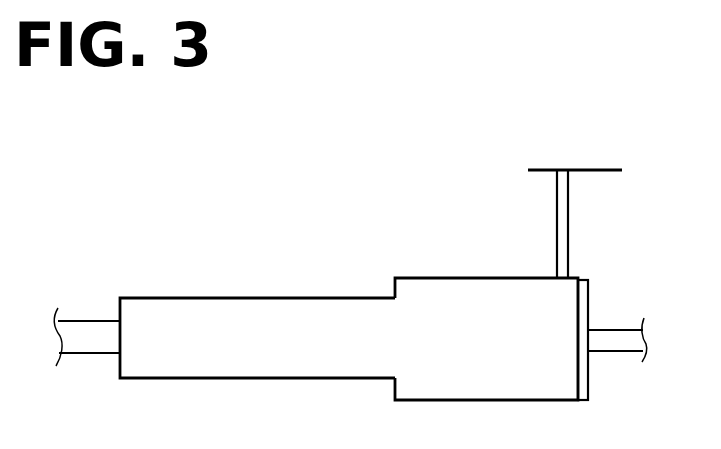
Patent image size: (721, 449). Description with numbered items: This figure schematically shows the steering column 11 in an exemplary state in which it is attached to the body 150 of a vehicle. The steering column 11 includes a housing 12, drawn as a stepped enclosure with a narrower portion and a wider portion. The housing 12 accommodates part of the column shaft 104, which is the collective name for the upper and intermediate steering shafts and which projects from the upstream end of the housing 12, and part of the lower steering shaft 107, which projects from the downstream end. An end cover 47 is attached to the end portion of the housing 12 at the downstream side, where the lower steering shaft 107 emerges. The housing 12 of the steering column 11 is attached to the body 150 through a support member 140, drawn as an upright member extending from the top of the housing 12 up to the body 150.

The steering column 11 is at (263, 231).
The housing 12 is at (300, 297).
The end cover 47 is at (590, 307).
The column shaft 104 is at (90, 319).
The lower steering shaft 107 is at (634, 352).
The support member 140 is at (570, 240).
The body 150 is at (604, 173).